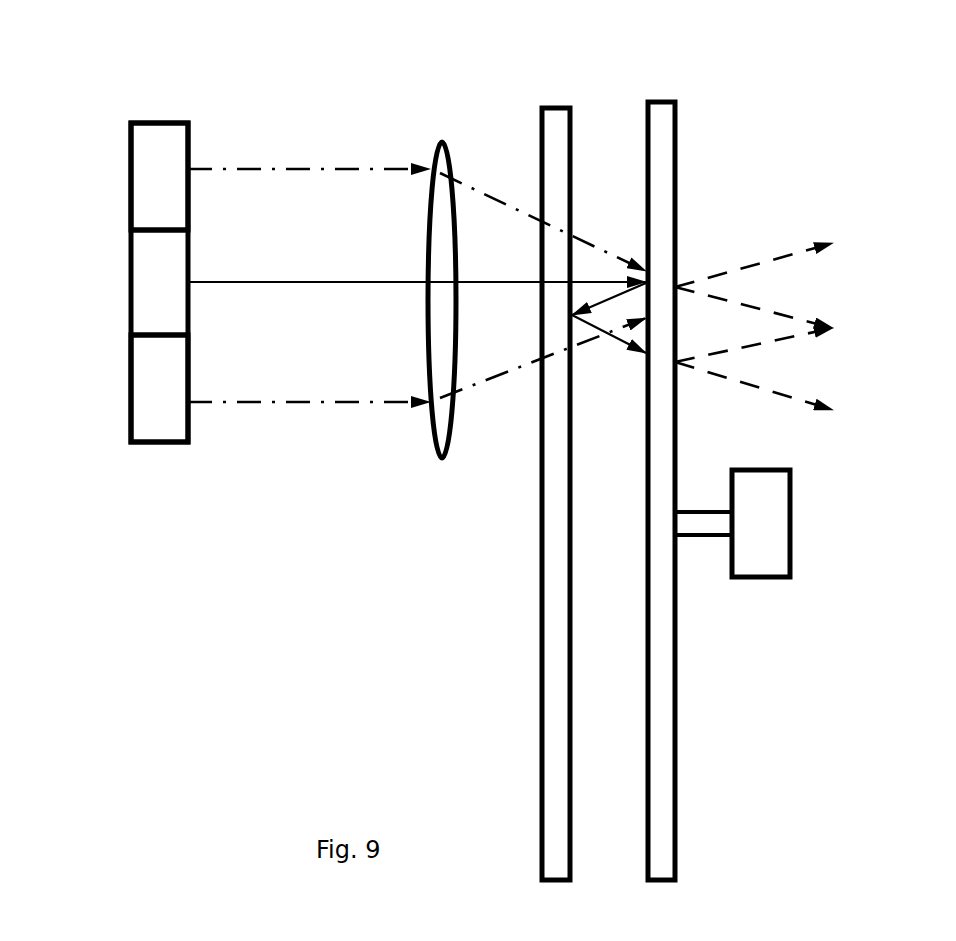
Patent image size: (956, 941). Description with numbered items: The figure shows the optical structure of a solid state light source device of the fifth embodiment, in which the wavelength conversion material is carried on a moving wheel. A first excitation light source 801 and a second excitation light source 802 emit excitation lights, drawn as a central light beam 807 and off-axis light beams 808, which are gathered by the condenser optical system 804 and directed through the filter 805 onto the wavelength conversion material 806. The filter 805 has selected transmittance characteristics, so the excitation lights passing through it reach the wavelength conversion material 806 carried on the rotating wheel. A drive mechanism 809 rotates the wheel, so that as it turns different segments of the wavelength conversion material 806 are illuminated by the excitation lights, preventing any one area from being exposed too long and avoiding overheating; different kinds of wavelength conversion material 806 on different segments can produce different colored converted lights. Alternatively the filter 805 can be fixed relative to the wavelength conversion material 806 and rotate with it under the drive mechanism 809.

The first excitation light source 801 is at (142, 285).
The second excitation light source 802 is at (158, 124).
The condenser optical system 804 is at (440, 141).
The filter 805 is at (552, 116).
The wavelength conversion material 806 is at (660, 112).
The central light beam 807 is at (259, 282).
The off-axis light beam 808 is at (297, 166).
The drive mechanism 809 is at (778, 523).